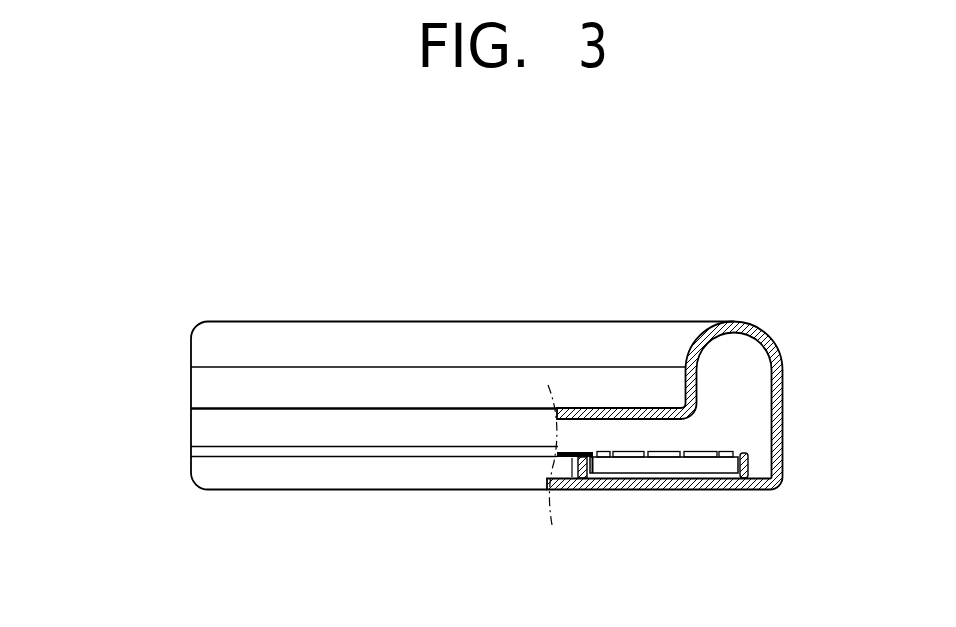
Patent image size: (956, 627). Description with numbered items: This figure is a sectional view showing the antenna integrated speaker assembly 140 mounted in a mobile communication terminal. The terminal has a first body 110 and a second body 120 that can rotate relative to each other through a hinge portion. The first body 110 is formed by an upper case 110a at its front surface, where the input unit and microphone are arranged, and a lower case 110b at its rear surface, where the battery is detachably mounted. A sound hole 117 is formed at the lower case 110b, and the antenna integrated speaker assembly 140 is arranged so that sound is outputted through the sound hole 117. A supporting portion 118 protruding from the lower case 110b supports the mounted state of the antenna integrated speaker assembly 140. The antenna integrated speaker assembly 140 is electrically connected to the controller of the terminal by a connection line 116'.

The first body 110 is at (305, 437).
The upper case 110a is at (203, 420).
The lower case 110b is at (205, 451).
The connection line 116' is at (573, 518).
The sound hole 117 is at (716, 480).
The supporting portion 118 is at (745, 480).
The second body 120 is at (600, 332).
The antenna integrated speaker assembly 140 is at (643, 462).